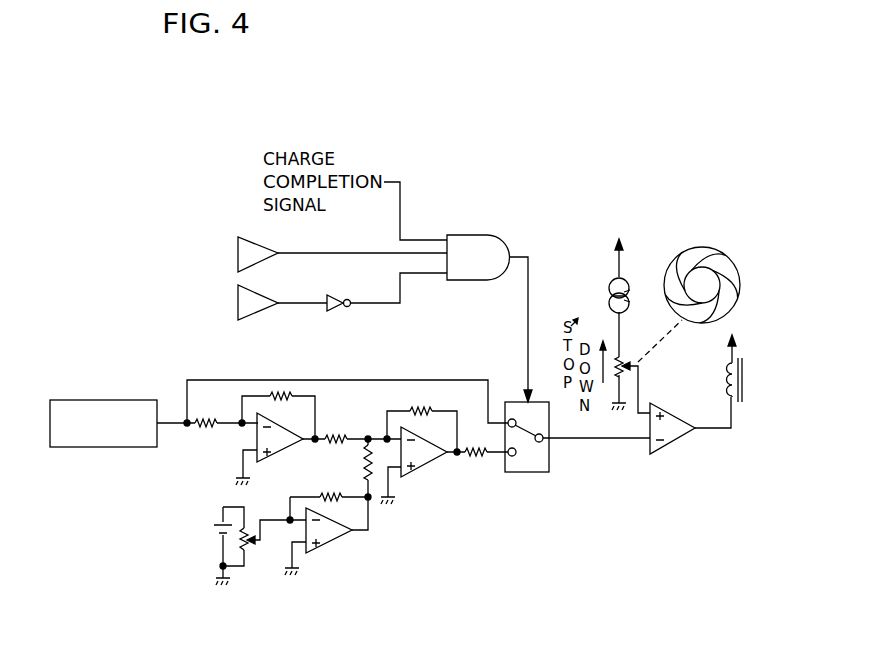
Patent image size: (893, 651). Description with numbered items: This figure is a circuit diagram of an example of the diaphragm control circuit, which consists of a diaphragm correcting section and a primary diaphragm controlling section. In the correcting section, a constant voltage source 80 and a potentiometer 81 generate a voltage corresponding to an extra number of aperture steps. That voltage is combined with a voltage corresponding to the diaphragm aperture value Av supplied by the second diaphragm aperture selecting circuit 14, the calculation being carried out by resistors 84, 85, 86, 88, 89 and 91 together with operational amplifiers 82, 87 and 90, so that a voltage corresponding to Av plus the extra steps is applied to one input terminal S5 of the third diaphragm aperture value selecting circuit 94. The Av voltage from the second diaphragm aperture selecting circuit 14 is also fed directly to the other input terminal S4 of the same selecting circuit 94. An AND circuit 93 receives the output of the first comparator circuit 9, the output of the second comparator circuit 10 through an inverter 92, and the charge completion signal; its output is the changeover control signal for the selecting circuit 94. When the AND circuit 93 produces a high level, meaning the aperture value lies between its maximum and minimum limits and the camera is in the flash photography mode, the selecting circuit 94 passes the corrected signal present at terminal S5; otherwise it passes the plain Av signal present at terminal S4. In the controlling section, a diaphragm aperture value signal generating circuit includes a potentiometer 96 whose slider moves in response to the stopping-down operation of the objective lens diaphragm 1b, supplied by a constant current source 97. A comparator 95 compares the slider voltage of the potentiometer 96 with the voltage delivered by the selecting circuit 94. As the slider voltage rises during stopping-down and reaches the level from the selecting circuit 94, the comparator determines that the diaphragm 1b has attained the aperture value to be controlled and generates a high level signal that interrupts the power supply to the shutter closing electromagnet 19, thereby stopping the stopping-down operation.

The second diaphragm aperture selecting circuit 14 is at (115, 447).
The resistor 85 is at (205, 430).
The resistor 86 is at (273, 398).
The operational amplifier 87 is at (282, 458).
The resistor 88 is at (340, 435).
The resistor 84 is at (365, 465).
The resistor 89 is at (425, 409).
The operational amplifier 90 is at (415, 470).
The resistor 91 is at (470, 457).
The operational amplifier 82 is at (330, 542).
The constant voltage source 80 is at (213, 525).
The potentiometer 81 is at (252, 546).
The first comparator circuit 9 is at (250, 237).
The second comparator circuit 10 is at (259, 315).
The inverter 92 is at (343, 312).
The AND circuit 93 is at (487, 237).
The third diaphragm aperture value selecting circuit 94 is at (528, 441).
The input terminal S4 is at (511, 418).
The input terminal S5 is at (513, 458).
The comparator 95 is at (677, 440).
The potentiometer 96 is at (624, 357).
The constant current source 97 is at (612, 292).
The objective lens diaphragm 1b is at (742, 277).
The shutter closing electromagnet 19 is at (748, 388).